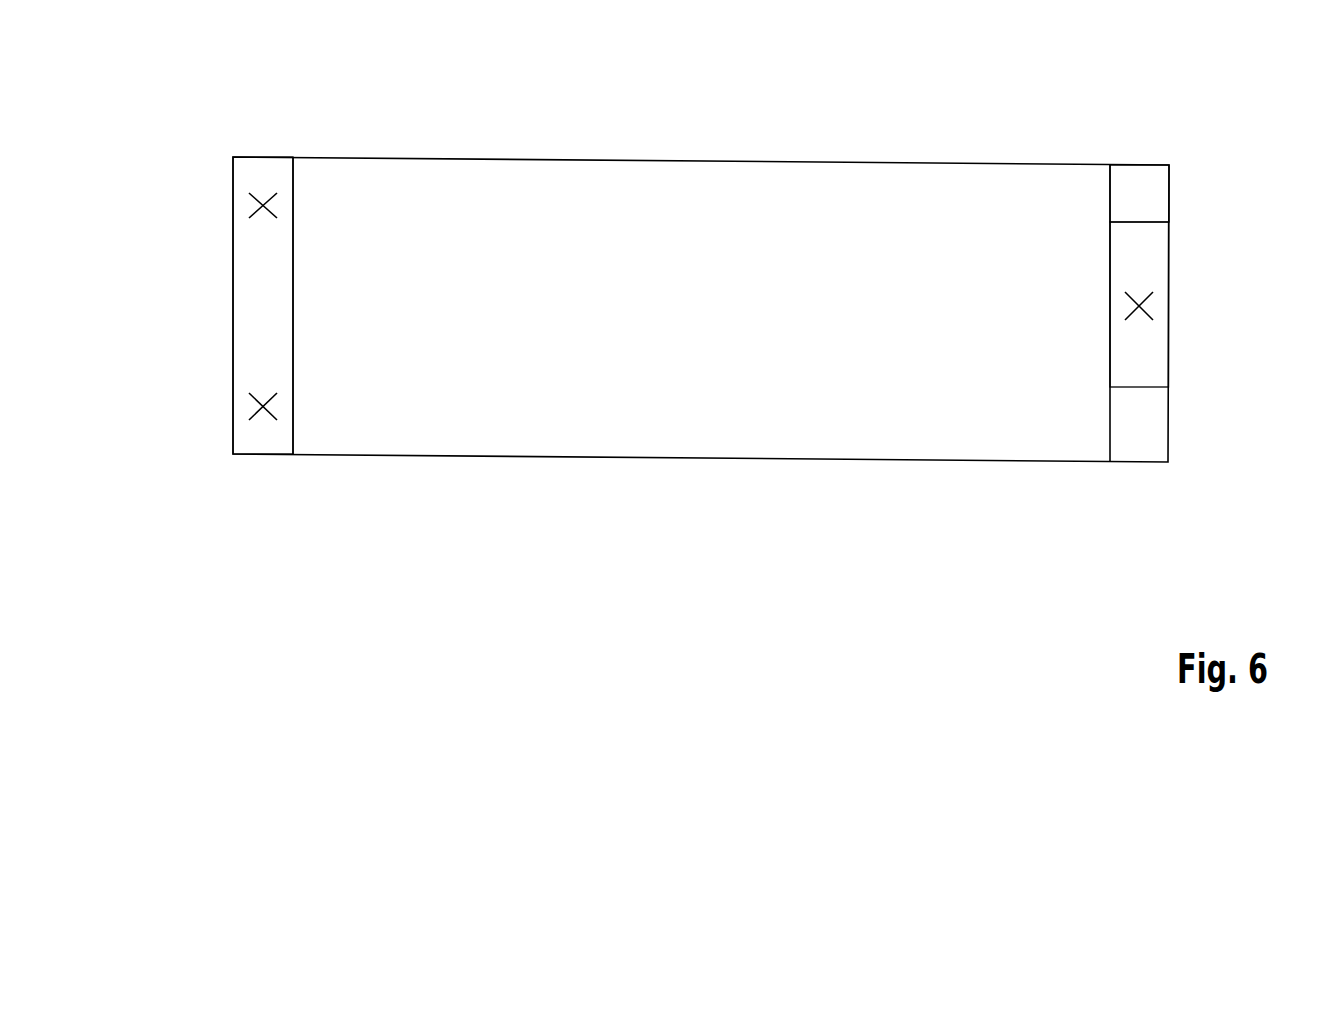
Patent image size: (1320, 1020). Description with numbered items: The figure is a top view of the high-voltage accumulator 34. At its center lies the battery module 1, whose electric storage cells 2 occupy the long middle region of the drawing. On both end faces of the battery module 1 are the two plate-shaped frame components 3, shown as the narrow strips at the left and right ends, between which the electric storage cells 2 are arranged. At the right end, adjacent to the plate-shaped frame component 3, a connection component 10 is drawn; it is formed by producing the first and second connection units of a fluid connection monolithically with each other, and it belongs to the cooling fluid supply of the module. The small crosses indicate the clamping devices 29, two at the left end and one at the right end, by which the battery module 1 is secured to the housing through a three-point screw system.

The battery module 1 is at (1003, 151).
The electric storage cells 2 is at (540, 208).
The plate-shaped frame component 3 is at (243, 281).
The connection component 10 is at (1157, 245).
The clamping device 29 is at (250, 205).
The high-voltage accumulator 34 is at (258, 101).